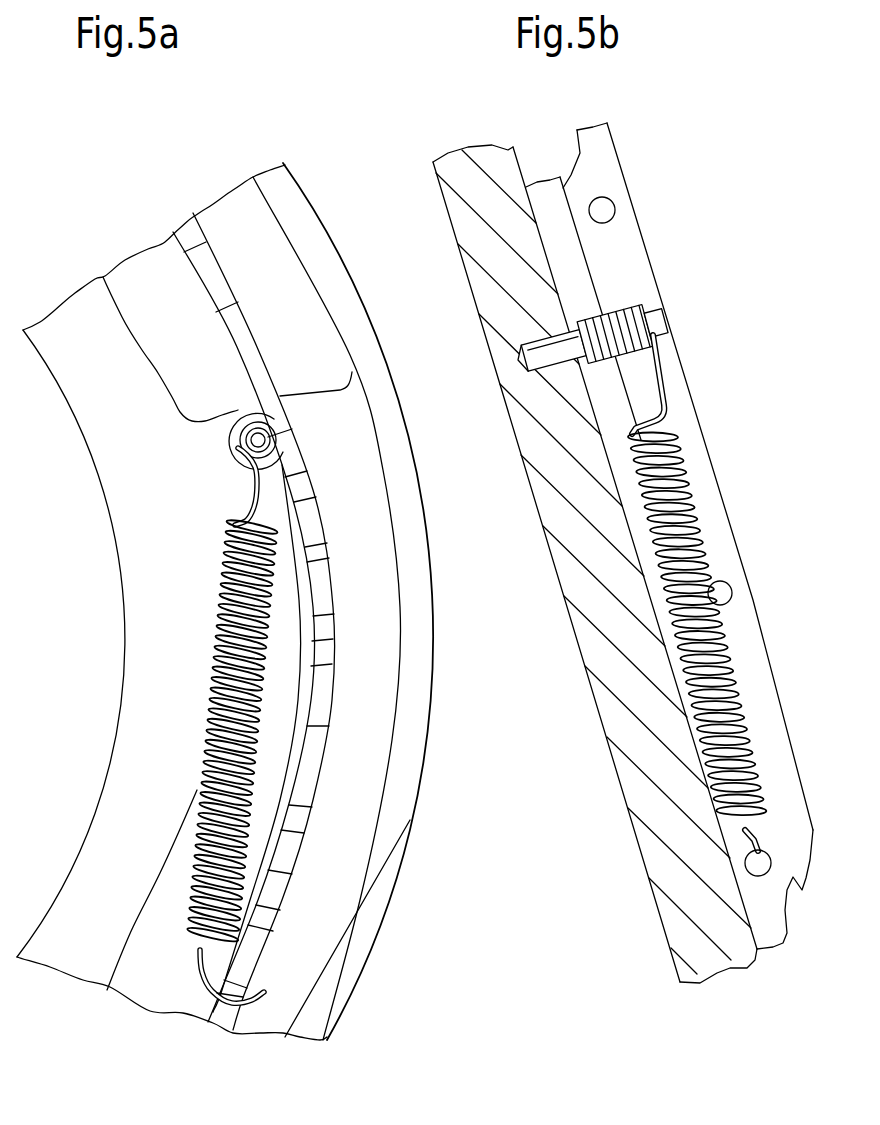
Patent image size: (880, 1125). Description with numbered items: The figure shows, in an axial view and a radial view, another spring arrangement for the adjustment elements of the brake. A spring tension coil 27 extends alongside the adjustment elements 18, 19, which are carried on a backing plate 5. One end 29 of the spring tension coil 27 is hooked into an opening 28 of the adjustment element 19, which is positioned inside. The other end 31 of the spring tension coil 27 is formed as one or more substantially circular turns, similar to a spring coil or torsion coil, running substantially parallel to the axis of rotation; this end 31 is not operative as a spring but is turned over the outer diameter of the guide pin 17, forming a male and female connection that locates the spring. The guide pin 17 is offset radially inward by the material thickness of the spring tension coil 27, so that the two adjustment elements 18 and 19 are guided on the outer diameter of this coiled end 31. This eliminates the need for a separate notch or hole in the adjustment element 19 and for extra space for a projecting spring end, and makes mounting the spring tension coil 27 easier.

In FIG. 5A, the backing plate 5 is at (62, 360).
In FIG. 5B, the backing plate 5 is at (595, 564).
In FIG. 5A, the guide pin 17 is at (245, 449).
In FIG. 5B, the guide pin 17 is at (668, 330).
In FIG. 5A, the adjustment element 18 is at (320, 788).
In FIG. 5B, the adjustment element 18 is at (618, 233).
In FIG. 5A, the adjustment element 19 is at (244, 627).
In FIG. 5B, the adjustment element 19 is at (583, 292).
In FIG. 5A, the spring tension coil 27 is at (200, 782).
In FIG. 5B, the spring tension coil 27 is at (718, 621).
In FIG. 5A, the opening 28 is at (213, 1005).
In FIG. 5B, the opening 28 is at (767, 857).
In FIG. 5A, the end of the spring tension coil 29 is at (266, 996).
In FIG. 5A, the end of the spring tension coil 31 is at (290, 433).
In FIG. 5B, the end of the spring tension coil 31 is at (613, 364).